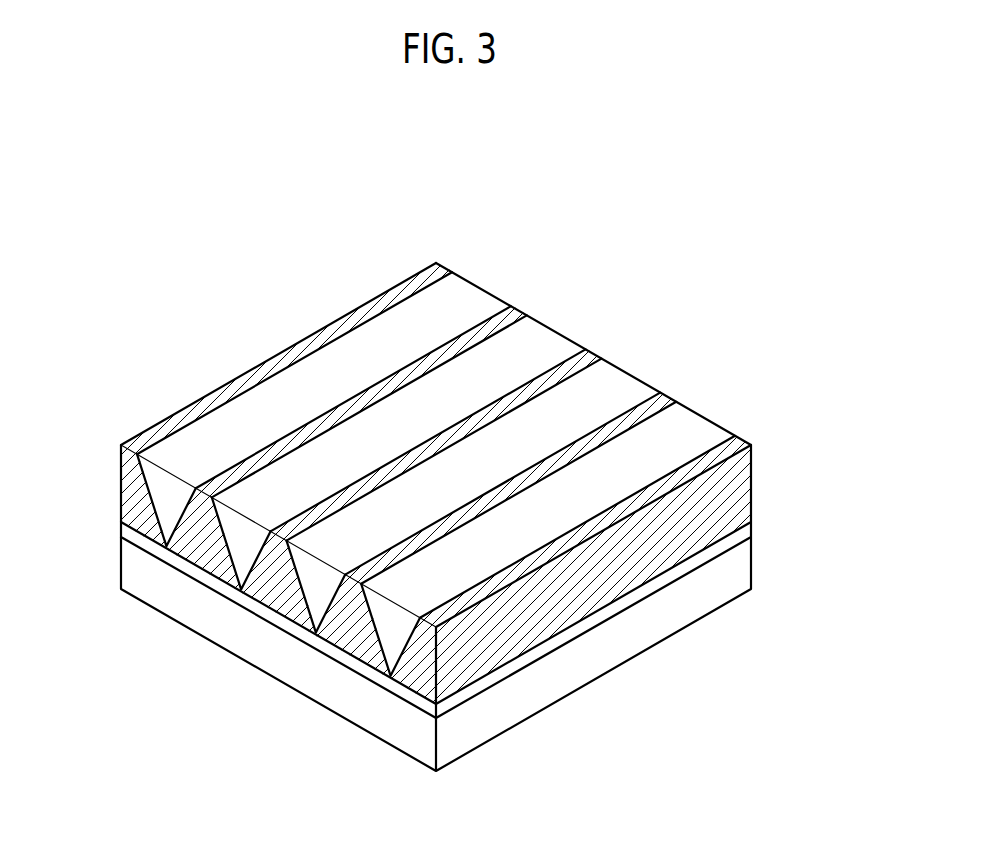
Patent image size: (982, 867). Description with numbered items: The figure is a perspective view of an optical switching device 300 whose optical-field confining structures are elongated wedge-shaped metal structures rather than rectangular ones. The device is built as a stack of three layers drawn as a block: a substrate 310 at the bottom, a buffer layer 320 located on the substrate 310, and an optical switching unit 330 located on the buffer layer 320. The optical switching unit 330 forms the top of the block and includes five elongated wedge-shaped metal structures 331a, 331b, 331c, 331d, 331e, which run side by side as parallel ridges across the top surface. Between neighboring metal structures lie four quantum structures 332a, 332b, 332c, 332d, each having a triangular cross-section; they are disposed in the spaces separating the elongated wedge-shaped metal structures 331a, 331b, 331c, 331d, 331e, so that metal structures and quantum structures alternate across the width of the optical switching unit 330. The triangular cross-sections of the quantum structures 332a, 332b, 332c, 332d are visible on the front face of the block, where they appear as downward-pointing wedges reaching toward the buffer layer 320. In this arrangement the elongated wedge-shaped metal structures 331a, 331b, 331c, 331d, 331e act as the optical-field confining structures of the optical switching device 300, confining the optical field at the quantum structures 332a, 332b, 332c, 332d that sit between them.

The optical switching device 300 is at (800, 427).
The substrate 310 is at (120, 573).
The buffer layer 320 is at (120, 535).
The optical switching unit 330 is at (120, 489).
The elongated wedge-shaped metal structure 331a is at (443, 261).
The elongated wedge-shaped metal structure 331b is at (517, 308).
The elongated wedge-shaped metal structure 331c is at (598, 357).
The elongated wedge-shaped metal structure 331d is at (672, 397).
The elongated wedge-shaped metal structure 331e is at (750, 440).
The quantum structure 332a is at (480, 288).
The quantum structure 332b is at (555, 332).
The quantum structure 332c is at (634, 378).
The quantum structure 332d is at (707, 418).